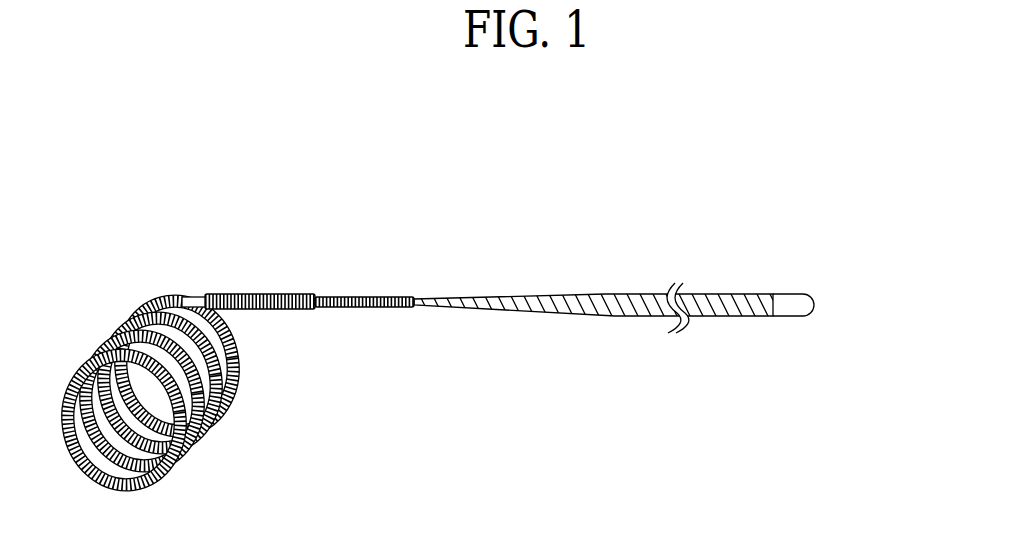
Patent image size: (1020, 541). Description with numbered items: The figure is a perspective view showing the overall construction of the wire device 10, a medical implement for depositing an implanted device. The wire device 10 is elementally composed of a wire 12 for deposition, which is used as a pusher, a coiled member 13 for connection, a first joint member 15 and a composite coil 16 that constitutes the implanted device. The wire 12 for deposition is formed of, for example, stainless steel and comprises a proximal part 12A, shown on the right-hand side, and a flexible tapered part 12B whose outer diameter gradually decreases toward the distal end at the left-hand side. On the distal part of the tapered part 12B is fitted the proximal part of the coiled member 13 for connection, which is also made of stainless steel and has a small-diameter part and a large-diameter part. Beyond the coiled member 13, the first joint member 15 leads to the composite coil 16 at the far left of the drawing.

The wire device 10 is at (446, 266).
The wire for deposition 12 is at (628, 292).
The proximal part 12A is at (763, 316).
The tapered part 12B is at (572, 315).
The coiled member for connection 13 is at (302, 297).
The first joint member 15 is at (192, 296).
The composite coil 16 is at (222, 444).